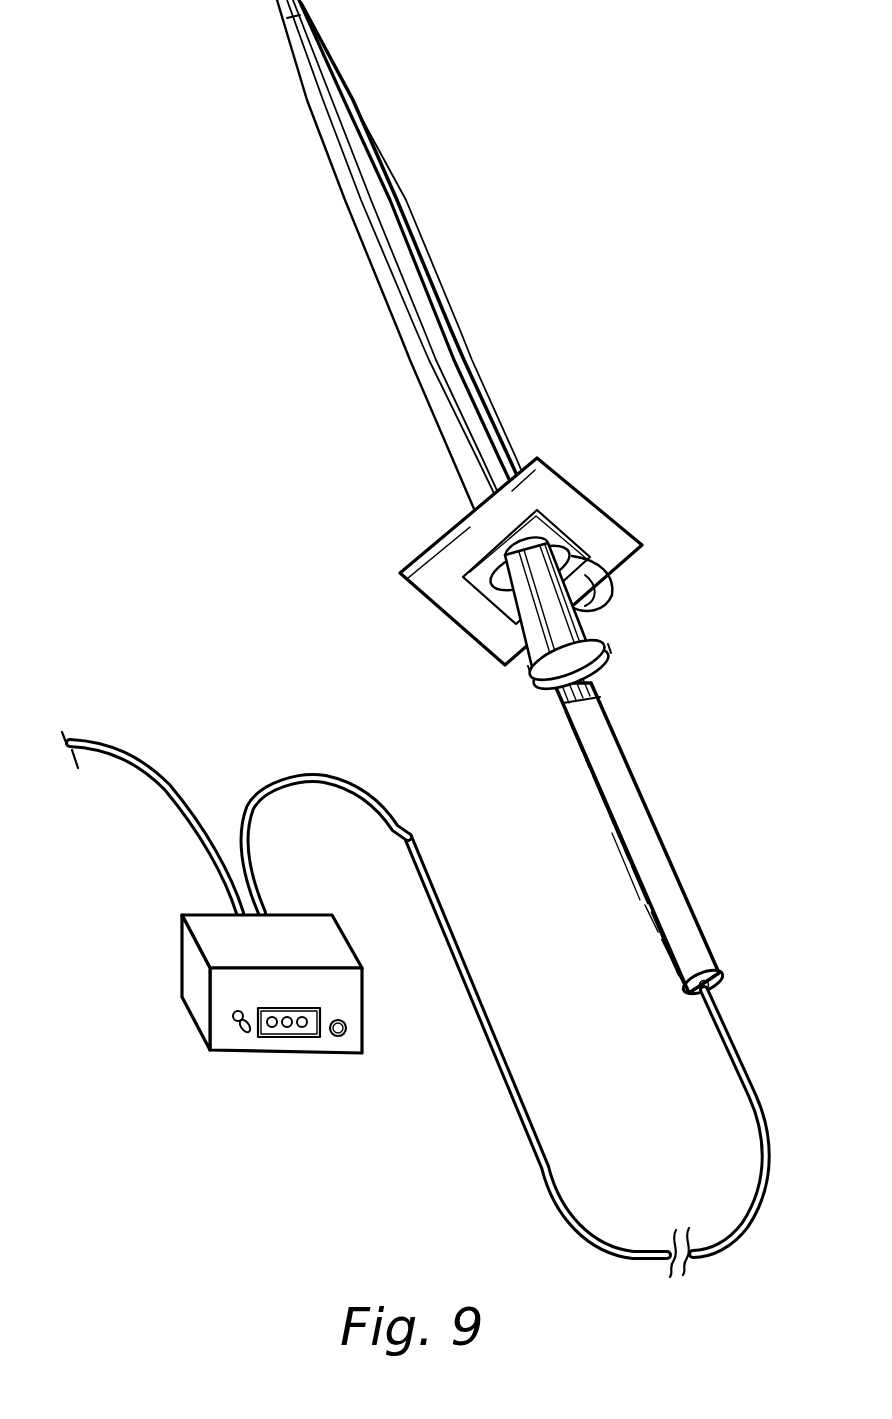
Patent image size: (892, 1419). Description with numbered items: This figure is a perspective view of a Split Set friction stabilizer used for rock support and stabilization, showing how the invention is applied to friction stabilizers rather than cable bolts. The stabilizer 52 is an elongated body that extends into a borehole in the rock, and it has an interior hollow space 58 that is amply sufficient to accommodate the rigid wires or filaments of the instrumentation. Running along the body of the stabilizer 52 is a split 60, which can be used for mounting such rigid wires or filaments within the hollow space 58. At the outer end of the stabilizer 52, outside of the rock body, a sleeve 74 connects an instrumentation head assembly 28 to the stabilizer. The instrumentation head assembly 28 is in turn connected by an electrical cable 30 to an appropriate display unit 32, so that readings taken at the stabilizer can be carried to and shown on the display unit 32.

The instrumentation head assembly 28 is at (663, 823).
The electrical cable 30 is at (527, 1140).
The display unit 32 is at (198, 998).
The stabilizer 52 is at (447, 297).
The interior hollow space 58 is at (445, 353).
The split 60 is at (365, 205).
The sleeve 74 is at (600, 685).